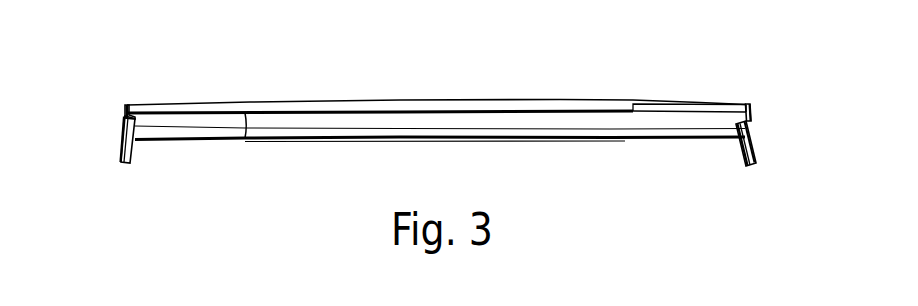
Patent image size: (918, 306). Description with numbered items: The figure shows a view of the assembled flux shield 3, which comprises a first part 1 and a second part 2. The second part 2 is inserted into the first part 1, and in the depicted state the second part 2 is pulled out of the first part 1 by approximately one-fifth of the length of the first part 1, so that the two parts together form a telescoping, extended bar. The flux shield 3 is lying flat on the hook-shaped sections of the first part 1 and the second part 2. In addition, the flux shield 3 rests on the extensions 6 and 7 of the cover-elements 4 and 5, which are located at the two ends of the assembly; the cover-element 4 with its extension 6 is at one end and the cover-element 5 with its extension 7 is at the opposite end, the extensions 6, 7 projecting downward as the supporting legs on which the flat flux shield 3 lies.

The first part 1 is at (275, 110).
The second part 2 is at (673, 108).
The flux shield 3 is at (397, 82).
The cover-element 4 is at (137, 104).
The cover-element 5 is at (750, 118).
The extension 6 is at (123, 145).
The extension 7 is at (755, 145).